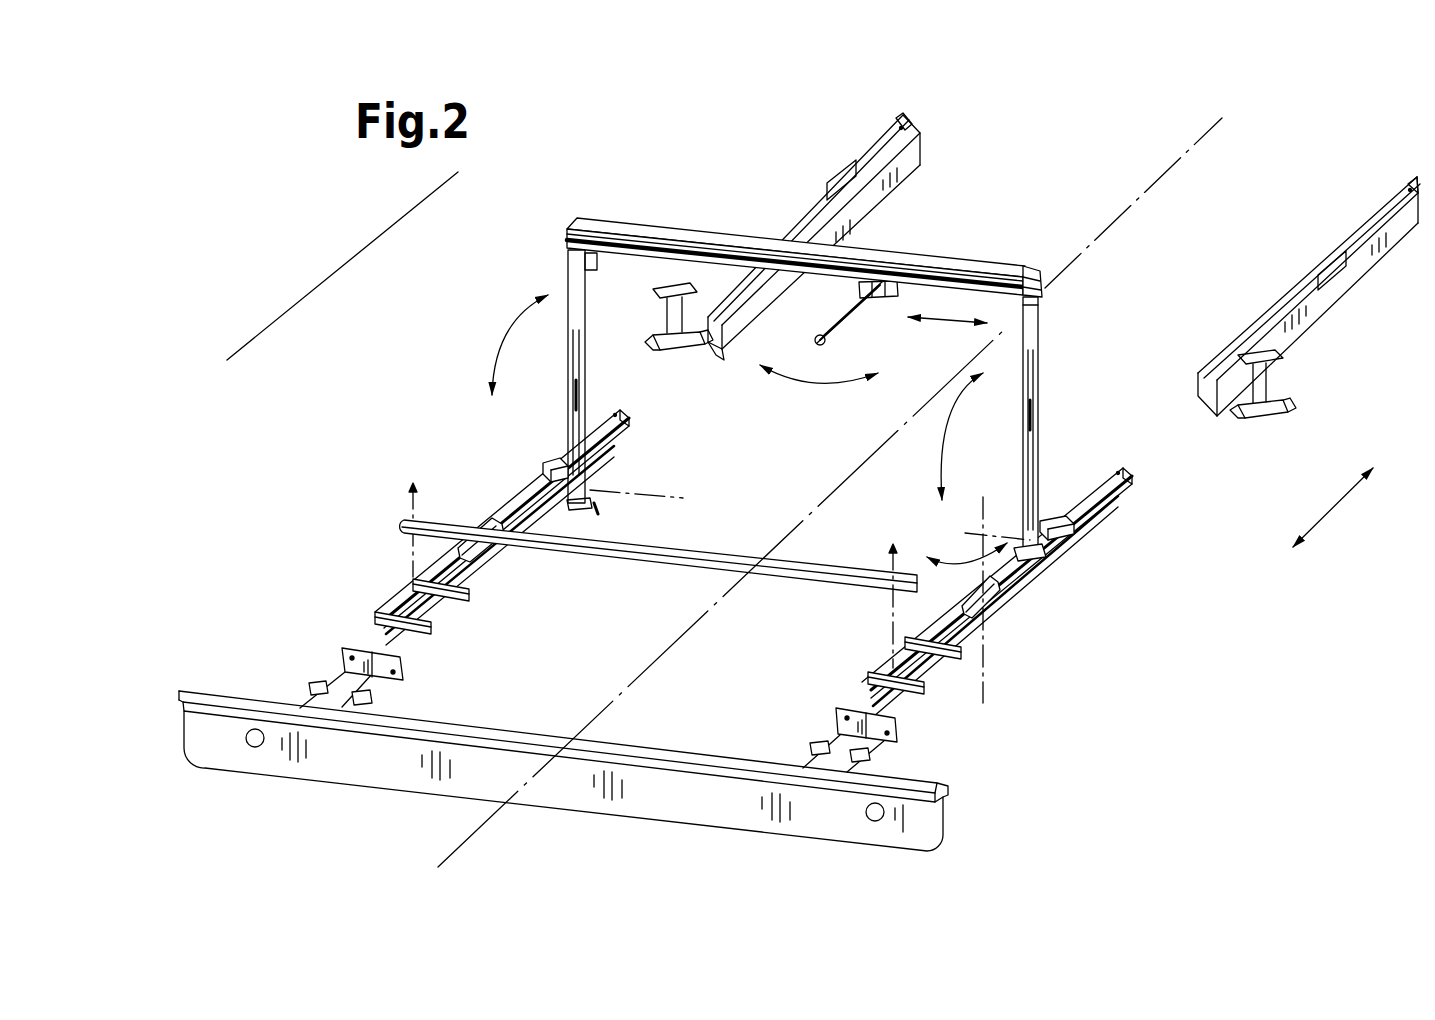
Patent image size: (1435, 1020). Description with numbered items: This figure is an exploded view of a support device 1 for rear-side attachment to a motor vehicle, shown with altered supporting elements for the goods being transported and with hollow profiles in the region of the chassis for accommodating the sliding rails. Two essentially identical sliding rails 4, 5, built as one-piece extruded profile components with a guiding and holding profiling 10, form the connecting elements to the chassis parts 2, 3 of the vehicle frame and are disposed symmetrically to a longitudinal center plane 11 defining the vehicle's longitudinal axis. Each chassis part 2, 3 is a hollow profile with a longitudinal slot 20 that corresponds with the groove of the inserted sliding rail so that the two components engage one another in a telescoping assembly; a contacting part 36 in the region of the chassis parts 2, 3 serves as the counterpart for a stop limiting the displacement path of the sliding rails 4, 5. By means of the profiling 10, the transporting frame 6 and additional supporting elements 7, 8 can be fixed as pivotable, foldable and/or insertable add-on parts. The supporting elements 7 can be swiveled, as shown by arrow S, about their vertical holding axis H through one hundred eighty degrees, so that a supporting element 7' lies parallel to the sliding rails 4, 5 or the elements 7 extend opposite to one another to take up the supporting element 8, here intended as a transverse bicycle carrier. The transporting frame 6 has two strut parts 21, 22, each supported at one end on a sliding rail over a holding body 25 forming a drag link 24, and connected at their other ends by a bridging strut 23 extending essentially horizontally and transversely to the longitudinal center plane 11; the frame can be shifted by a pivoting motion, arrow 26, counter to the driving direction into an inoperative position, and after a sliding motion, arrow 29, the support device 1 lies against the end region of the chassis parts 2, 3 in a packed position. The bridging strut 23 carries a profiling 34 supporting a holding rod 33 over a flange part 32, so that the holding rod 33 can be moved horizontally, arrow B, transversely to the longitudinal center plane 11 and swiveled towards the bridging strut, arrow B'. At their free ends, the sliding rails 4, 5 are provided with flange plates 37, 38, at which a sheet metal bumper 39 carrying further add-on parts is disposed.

The support device 1 is at (342, 266).
The chassis part 2 is at (1350, 299).
The chassis part 3 is at (937, 158).
The sliding rail 4 is at (1068, 618).
The sliding rail 5 is at (427, 463).
The transporting frame 6 is at (535, 268).
The supporting element 7 is at (632, 650).
The supporting element 7' is at (695, 594).
The supporting element 8 is at (669, 563).
The guiding and holding profiling 10 is at (527, 495).
The longitudinal center plane 11 is at (1197, 140).
The longitudinal slot 20 is at (816, 214).
The strut part 21 is at (566, 262).
The strut part 22 is at (1041, 357).
The bridging strut 23 is at (723, 240).
The drag link 24 is at (592, 488).
The holding body 25 is at (567, 519).
The pivoting motion arrow 26 is at (508, 342).
The sliding motion arrow 29 is at (1327, 516).
The flange part 32 is at (887, 281).
The holding rod 33 is at (840, 322).
The profiling 34 is at (1036, 268).
The contacting part 36 is at (885, 140).
The flange plate 37 is at (350, 653).
The flange plate 38 is at (897, 733).
The sheet metal bumper 39 is at (700, 805).
The arrow B is at (948, 265).
The arrow B' is at (819, 404).
The vertical holding axis H is at (985, 510).
The arrow S is at (987, 558).